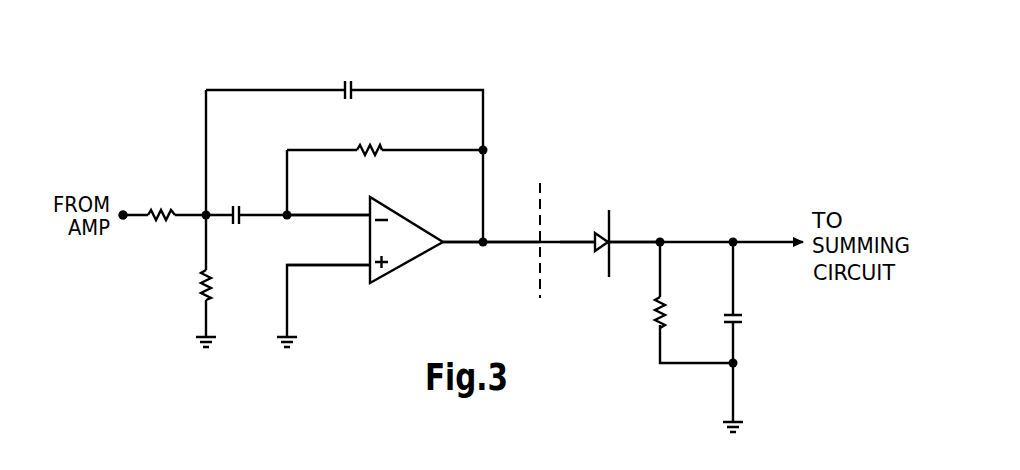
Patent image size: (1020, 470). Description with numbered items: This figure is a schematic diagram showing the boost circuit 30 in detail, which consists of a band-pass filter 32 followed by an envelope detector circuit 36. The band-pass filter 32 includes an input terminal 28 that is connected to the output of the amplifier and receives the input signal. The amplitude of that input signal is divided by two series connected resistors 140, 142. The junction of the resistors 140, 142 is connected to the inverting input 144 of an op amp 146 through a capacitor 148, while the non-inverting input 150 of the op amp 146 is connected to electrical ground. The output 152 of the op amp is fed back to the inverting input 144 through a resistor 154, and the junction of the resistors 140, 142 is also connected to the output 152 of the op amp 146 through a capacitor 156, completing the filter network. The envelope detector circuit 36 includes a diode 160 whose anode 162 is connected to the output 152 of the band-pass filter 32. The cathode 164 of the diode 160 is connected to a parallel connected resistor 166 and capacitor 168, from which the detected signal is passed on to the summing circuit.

The input terminal 28 is at (127, 219).
The boost circuit 30 is at (115, 371).
The band-pass filter 32 is at (180, 79).
The envelope detector circuit 36 is at (702, 113).
The resistor 140 is at (165, 208).
The resistor 142 is at (200, 285).
The inverting input 144 is at (369, 215).
The op amp 146 is at (412, 247).
The capacitor 148 is at (238, 205).
The non-inverting input 150 is at (363, 267).
The output 152 is at (447, 243).
The resistor 154 is at (368, 143).
The capacitor 156 is at (348, 83).
The diode 160 is at (613, 190).
The anode 162 is at (596, 248).
The cathode 164 is at (612, 241).
The resistor 166 is at (656, 308).
The capacitor 168 is at (745, 320).